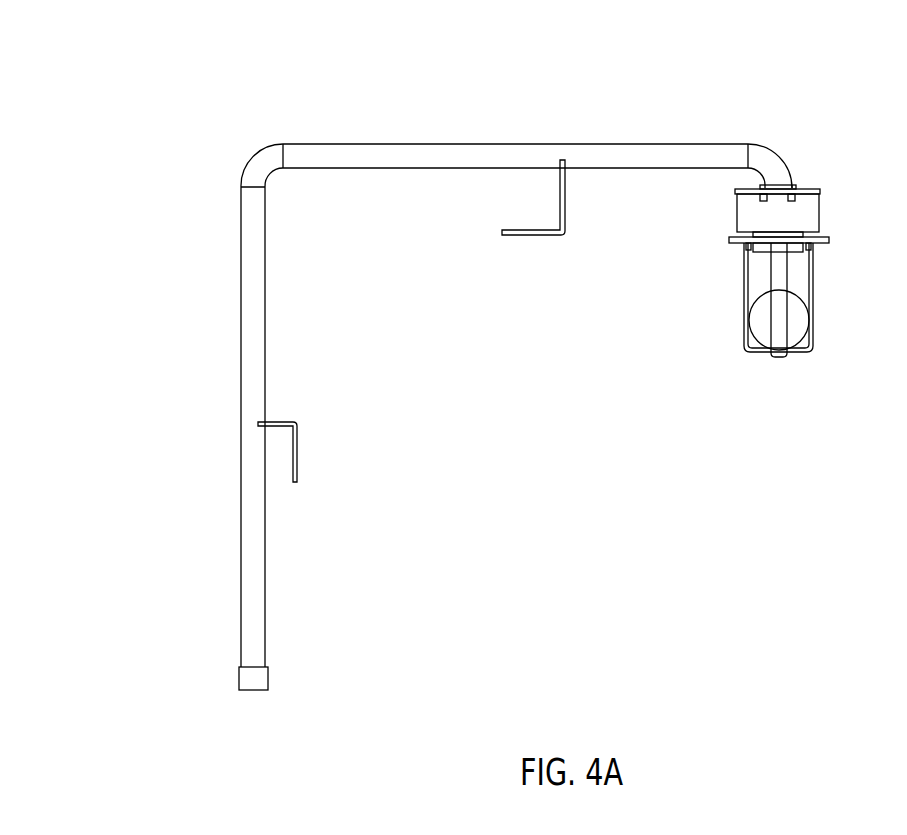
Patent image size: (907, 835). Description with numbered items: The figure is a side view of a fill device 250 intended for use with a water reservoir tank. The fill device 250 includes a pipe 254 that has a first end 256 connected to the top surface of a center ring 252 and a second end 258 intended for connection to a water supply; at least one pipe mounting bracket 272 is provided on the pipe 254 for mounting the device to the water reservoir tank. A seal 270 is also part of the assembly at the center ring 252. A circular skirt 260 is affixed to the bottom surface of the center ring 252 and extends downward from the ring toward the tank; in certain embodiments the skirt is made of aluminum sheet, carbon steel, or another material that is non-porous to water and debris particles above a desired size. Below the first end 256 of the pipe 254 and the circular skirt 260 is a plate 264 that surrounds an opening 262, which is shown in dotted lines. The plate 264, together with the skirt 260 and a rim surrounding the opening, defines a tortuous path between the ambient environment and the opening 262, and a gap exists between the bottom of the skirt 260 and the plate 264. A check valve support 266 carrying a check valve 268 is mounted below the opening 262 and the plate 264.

The fill device 250 is at (672, 96).
The center ring 252 is at (820, 191).
The pipe 254 is at (393, 153).
The first end 256 is at (780, 172).
The second end 258 is at (258, 678).
The circular skirt 260 is at (815, 216).
The opening 262 is at (748, 248).
The plate 264 is at (729, 239).
The check valve support 266 is at (815, 346).
The check valve 268 is at (800, 310).
The seal 270 is at (797, 188).
The pipe mounting bracket 272 is at (541, 237).